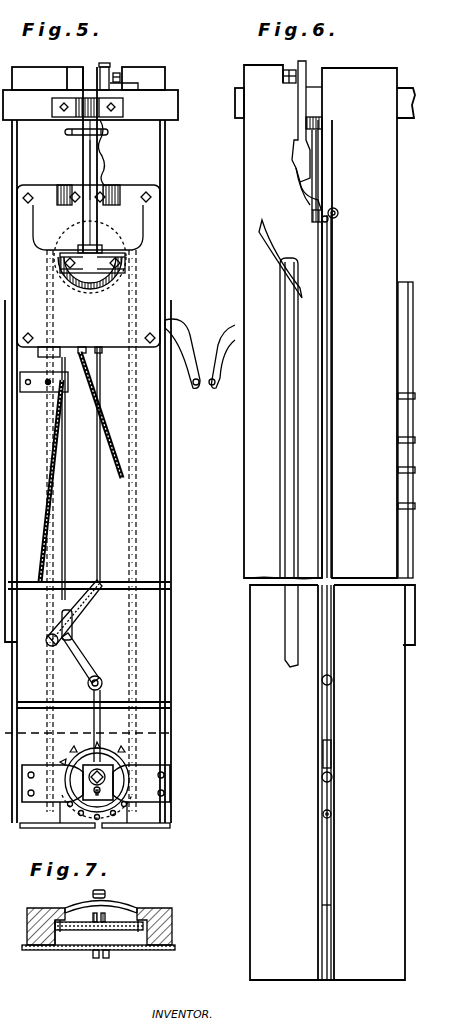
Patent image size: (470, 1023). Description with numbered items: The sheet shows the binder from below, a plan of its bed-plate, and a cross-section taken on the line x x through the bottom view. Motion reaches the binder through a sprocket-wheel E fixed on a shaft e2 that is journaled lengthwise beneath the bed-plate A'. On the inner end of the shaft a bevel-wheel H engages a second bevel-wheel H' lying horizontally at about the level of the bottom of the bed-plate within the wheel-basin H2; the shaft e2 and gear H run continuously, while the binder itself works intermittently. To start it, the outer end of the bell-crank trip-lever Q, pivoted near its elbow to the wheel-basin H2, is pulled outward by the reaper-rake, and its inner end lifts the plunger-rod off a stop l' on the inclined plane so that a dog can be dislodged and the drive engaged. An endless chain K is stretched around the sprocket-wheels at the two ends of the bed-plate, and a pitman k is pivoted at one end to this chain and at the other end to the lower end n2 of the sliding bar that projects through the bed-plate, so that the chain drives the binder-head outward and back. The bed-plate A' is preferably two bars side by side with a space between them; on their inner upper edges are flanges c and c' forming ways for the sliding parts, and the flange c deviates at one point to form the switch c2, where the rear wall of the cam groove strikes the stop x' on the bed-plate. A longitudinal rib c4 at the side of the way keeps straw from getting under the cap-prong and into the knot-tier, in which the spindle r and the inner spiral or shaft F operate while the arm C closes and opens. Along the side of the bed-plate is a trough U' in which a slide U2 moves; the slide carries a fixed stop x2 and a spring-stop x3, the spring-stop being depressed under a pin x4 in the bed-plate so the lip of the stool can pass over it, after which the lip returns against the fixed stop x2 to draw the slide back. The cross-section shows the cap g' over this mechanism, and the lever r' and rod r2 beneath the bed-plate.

In FIG. 5, the sprocket-wheel E is at (71, 136).
In FIG. 5, the shaft e2 is at (79, 170).
In FIG. 5, the bevel-wheel H is at (88, 227).
In FIG. 5, the bevel-wheel H' is at (90, 264).
In FIG. 5, the wheel-basin H2 is at (92, 285).
In FIG. 5, the endless chain K is at (44, 344).
In FIG. 7, the endless chain K is at (100, 930).
In FIG. 5, the spindle r is at (92, 442).
In FIG. 5, the rod r2 is at (47, 481).
In FIG. 5, the lever r' is at (76, 613).
In FIG. 5, the pitman k is at (80, 658).
In FIG. 5, the lower end of sliding bar n2 is at (105, 684).
In FIG. 5, the section line x is at (92, 733).
In FIG. 5, the inner spiral or shaft F is at (96, 781).
In FIG. 6, the trip-lever Q is at (200, 352).
In FIG. 6, the bed-plate A' is at (258, 157).
In FIG. 6, the arm C is at (298, 105).
In FIG. 6, the stop x' is at (332, 214).
In FIG. 6, the switch c2 is at (276, 252).
In FIG. 6, the rib c4 is at (281, 353).
In FIG. 7, the flange c is at (93, 963).
In FIG. 6, the flange c is at (312, 550).
In FIG. 7, the flange c' is at (110, 962).
In FIG. 6, the flange c' is at (331, 597).
In FIG. 6, the trough U' is at (406, 420).
In FIG. 6, the pin x4 is at (399, 398).
In FIG. 6, the spring-stop x3 is at (399, 442).
In FIG. 6, the slide U2 is at (400, 470).
In FIG. 6, the fixed stop x2 is at (399, 508).
In FIG. 7, the cap g' is at (89, 901).
In FIG. 7, the stop l' is at (99, 933).